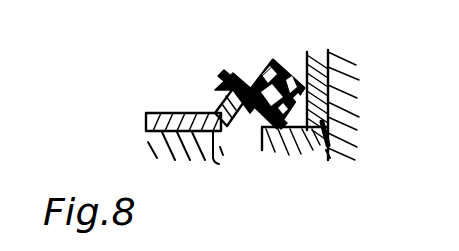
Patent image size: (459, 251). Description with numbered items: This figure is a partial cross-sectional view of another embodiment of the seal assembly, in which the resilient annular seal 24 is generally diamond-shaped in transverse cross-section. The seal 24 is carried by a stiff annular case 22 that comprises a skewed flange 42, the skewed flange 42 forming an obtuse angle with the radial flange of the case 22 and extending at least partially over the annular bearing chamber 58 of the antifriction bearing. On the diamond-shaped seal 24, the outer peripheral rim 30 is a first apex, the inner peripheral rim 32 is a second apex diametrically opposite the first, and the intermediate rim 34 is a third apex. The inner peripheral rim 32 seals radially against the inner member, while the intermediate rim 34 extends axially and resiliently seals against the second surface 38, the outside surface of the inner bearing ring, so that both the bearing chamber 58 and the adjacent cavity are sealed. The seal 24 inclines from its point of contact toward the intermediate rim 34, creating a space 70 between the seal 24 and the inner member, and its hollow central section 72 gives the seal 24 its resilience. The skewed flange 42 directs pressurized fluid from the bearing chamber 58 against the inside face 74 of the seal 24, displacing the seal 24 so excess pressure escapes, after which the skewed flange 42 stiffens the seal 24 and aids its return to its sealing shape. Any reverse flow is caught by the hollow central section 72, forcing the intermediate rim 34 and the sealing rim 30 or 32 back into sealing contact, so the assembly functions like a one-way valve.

The annular case 22 is at (150, 110).
The annular seal 24 is at (243, 72).
The outer peripheral rim 30 is at (228, 80).
The inner peripheral rim 32 is at (331, 99).
The intermediate rim 34 is at (266, 128).
The second surface 38 is at (329, 154).
The skewed flange 42 is at (214, 109).
The annular bearing chamber 58 is at (224, 148).
The space 70 is at (330, 125).
The hollow central section 72 is at (283, 72).
The inside face 74 is at (258, 110).